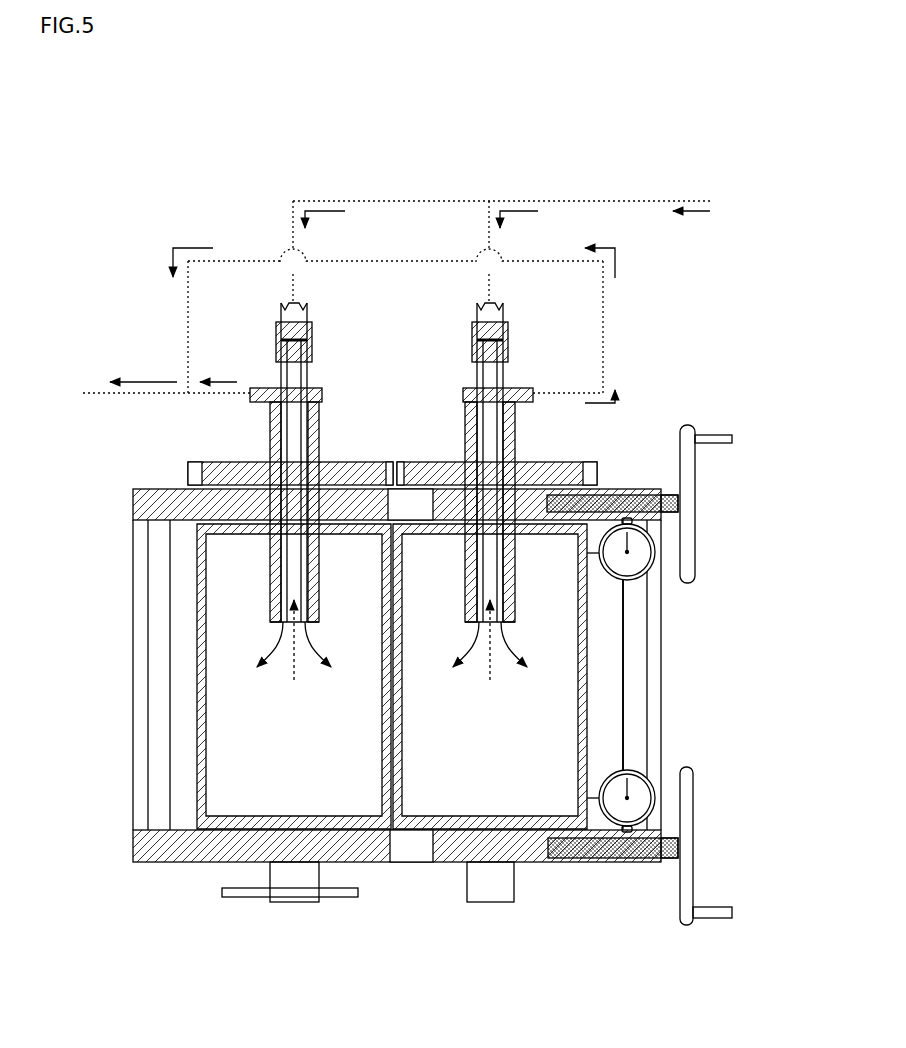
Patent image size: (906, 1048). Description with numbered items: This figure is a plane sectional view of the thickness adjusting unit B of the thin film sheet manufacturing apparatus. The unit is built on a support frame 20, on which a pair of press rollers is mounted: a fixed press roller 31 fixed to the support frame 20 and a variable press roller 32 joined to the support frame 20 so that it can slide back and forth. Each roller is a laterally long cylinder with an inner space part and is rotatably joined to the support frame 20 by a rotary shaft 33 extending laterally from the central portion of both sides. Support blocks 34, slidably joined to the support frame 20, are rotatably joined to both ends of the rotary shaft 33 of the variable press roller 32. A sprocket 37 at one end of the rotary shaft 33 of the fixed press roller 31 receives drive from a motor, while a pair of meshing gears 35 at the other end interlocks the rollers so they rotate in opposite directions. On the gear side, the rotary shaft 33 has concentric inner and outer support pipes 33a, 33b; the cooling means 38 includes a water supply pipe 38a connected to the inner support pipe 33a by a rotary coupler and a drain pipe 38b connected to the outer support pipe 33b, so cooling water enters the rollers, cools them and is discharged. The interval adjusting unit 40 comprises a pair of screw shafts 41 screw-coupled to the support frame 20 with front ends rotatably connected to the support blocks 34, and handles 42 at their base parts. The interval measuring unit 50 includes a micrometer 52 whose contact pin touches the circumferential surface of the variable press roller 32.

The support frame 20 is at (195, 862).
The fixed press roller 31 is at (197, 647).
The variable press roller 32 is at (587, 675).
The rotary shaft 33 is at (325, 440).
The inner support pipe 33a is at (280, 367).
The outer support pipe 33b is at (630, 357).
The support block 34 is at (432, 505).
The gear 35 is at (213, 460).
The sprocket 37 is at (242, 897).
The cooling means 38 is at (396, 268).
The water supply pipe 38a is at (295, 218).
The drain pipe 38b is at (605, 295).
The interval adjusting unit 40 is at (705, 493).
The screw shaft 41 is at (668, 513).
The handle 42 is at (695, 467).
The interval measuring unit 50 is at (653, 573).
The micrometer 52 is at (613, 582).
The thickness adjusting unit B is at (135, 877).